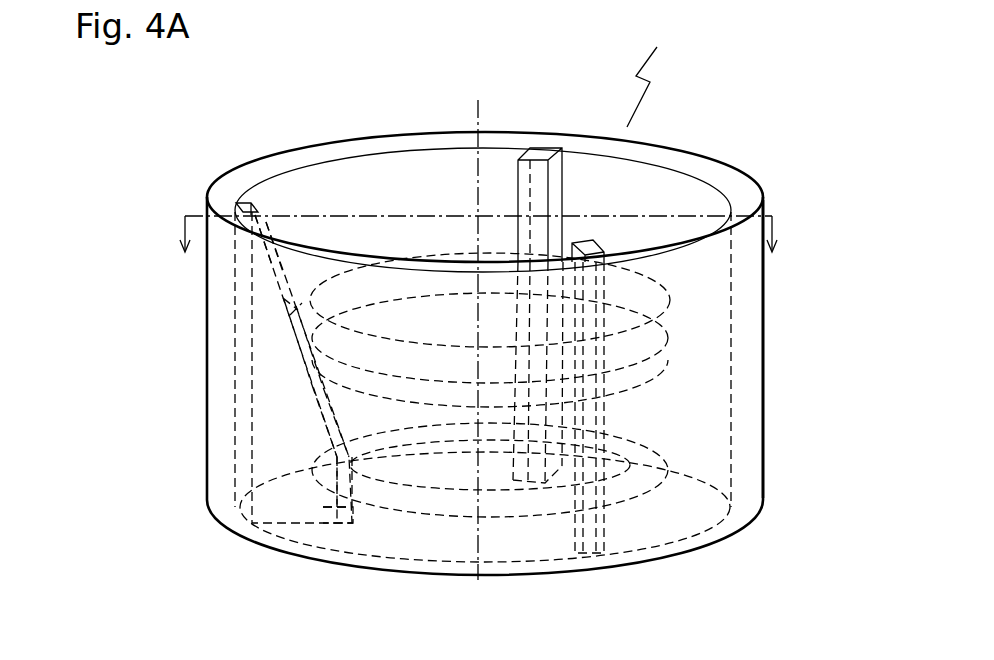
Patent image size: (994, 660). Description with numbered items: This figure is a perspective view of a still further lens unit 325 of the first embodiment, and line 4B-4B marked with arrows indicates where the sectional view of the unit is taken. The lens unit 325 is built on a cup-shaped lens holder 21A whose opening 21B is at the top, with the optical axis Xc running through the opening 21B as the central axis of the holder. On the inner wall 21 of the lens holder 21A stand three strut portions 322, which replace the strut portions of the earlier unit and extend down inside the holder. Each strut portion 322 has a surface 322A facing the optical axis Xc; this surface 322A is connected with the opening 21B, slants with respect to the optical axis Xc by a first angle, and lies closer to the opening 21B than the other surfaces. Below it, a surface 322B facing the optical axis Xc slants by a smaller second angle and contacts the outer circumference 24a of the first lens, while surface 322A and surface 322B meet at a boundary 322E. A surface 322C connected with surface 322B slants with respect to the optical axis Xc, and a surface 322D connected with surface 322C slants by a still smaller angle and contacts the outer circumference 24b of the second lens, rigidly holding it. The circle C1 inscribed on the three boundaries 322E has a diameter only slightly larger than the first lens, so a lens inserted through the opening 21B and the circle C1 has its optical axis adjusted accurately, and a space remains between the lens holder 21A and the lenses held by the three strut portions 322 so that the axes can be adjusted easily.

The inner wall 21 is at (638, 193).
The lens holder 21A is at (728, 185).
The opening 21B is at (343, 188).
The strut portion 322 is at (535, 185).
The surface 322A is at (272, 265).
The surface 322B is at (300, 340).
The surface 322C is at (313, 412).
The surface 322D is at (340, 493).
The boundary 322E is at (290, 305).
The outer circumference 24a is at (327, 372).
The outer circumference 24b is at (360, 480).
The lens unit 325 is at (666, 76).
The circle C1 is at (672, 298).
The optical axis Xc is at (477, 105).
The line 4B- 4B is at (486, 250).